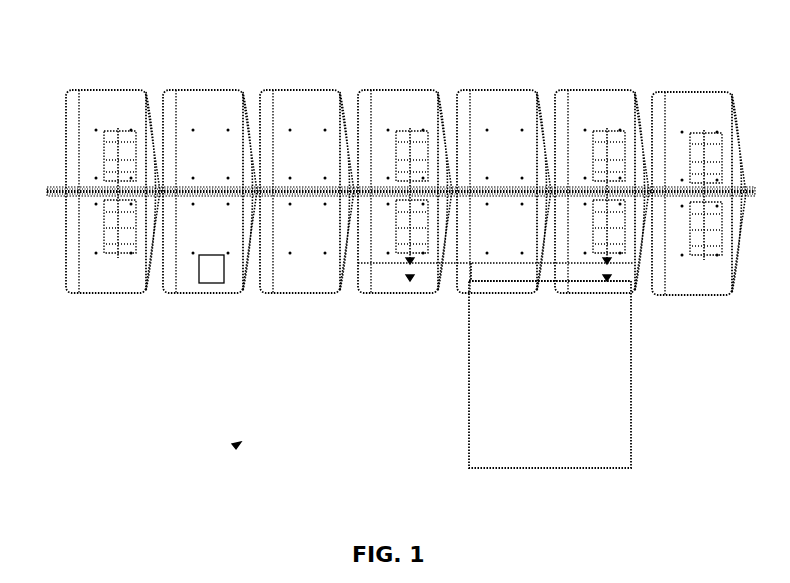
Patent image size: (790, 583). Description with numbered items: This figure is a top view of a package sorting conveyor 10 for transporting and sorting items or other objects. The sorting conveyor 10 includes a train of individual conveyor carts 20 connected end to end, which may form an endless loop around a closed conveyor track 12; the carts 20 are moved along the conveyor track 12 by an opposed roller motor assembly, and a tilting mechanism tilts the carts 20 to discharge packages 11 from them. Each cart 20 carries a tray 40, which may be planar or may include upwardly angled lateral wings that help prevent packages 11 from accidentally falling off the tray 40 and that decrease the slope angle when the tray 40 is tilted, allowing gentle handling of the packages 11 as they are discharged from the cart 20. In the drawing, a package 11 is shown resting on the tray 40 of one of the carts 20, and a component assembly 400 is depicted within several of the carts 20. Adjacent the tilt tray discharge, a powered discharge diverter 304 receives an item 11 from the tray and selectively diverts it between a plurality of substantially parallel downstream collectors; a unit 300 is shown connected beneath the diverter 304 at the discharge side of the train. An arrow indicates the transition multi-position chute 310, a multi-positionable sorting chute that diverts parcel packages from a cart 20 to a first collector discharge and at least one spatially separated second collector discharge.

The package sorting conveyor 10 is at (456, 22).
The tray 40 is at (193, 108).
The panel component assembly 400 is at (120, 146).
The conveyor track 12 is at (66, 193).
The package 11 is at (211, 273).
The conveyor cart 20 is at (290, 294).
The powered discharge diverter 304 is at (480, 296).
The control unit 300 is at (548, 395).
The transition multi-position chute 310 is at (234, 447).